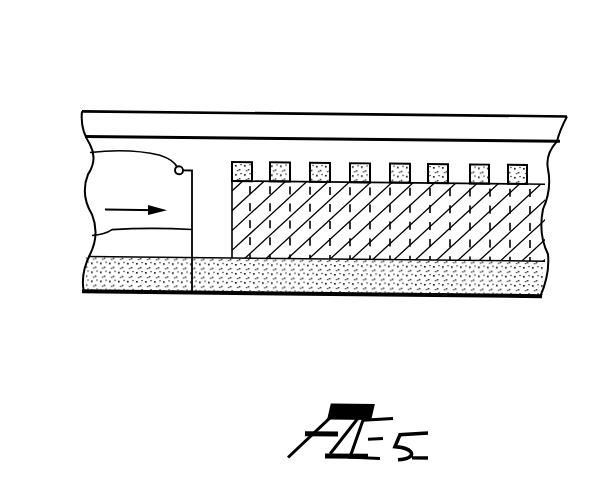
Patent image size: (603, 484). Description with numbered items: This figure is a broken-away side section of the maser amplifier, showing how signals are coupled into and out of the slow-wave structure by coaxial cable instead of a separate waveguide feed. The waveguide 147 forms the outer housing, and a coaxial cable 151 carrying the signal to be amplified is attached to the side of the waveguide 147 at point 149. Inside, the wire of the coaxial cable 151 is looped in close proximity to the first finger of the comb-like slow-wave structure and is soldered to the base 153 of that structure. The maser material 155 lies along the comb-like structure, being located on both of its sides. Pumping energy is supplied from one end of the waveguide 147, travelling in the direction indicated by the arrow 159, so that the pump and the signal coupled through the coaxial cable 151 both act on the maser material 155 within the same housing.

The waveguide 147 is at (174, 112).
The point 149 is at (92, 155).
The coaxial cable 151 is at (276, 148).
The base 153 is at (226, 279).
The maser material 155 is at (297, 240).
The arrow 159 is at (130, 208).